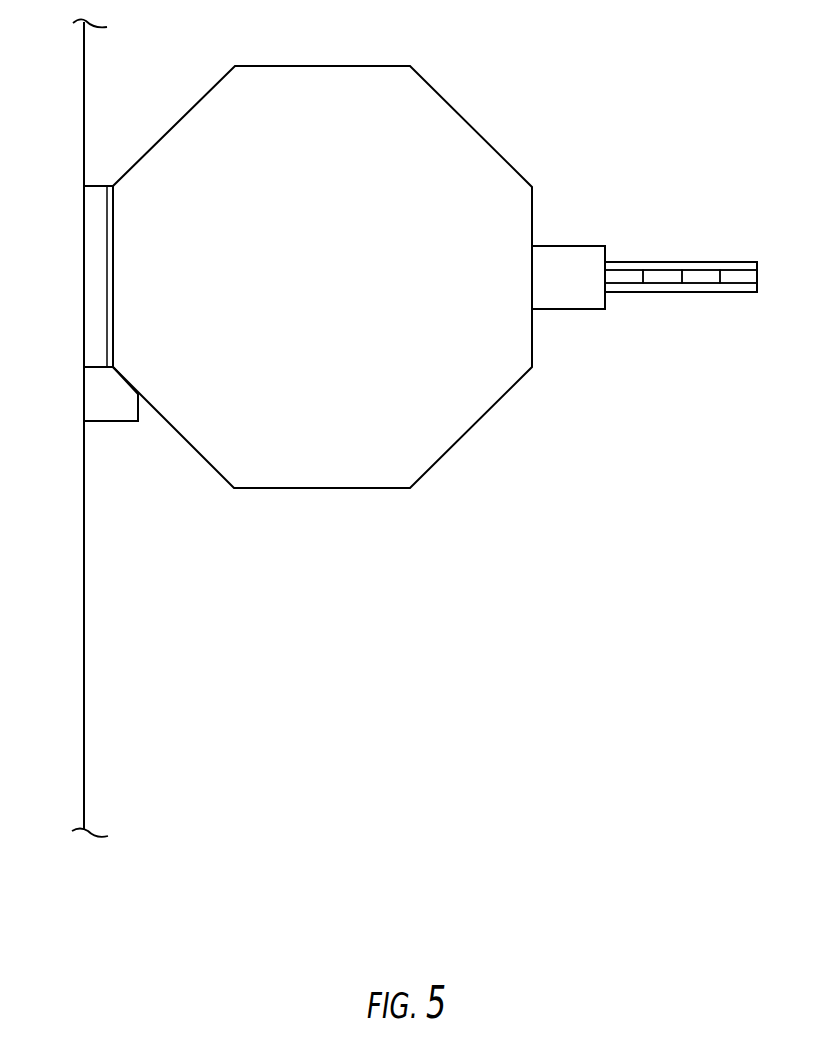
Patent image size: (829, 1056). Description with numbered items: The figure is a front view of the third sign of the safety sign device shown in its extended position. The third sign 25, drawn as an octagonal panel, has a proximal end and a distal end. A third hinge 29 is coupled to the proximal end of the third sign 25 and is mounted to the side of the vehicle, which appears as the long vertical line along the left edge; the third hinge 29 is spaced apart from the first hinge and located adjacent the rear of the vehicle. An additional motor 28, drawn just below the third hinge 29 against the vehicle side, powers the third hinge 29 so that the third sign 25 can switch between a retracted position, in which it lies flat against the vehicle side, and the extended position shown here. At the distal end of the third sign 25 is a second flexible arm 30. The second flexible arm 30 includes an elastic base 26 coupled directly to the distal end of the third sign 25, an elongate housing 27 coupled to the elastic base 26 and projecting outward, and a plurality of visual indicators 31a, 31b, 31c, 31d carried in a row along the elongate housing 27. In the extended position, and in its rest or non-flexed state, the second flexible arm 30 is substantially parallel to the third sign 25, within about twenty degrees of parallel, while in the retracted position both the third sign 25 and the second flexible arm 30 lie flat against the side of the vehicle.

The third sign 25 is at (444, 132).
The elastic base 26 is at (579, 254).
The elongate housing 27 is at (657, 270).
The additional motor 28 is at (97, 414).
The third hinge 29 is at (96, 192).
The second flexible arm 30 is at (655, 248).
The visual indicator 31a is at (620, 284).
The visual indicator 31b is at (667, 284).
The visual indicator 31c is at (703, 275).
The visual indicator 31d is at (741, 277).